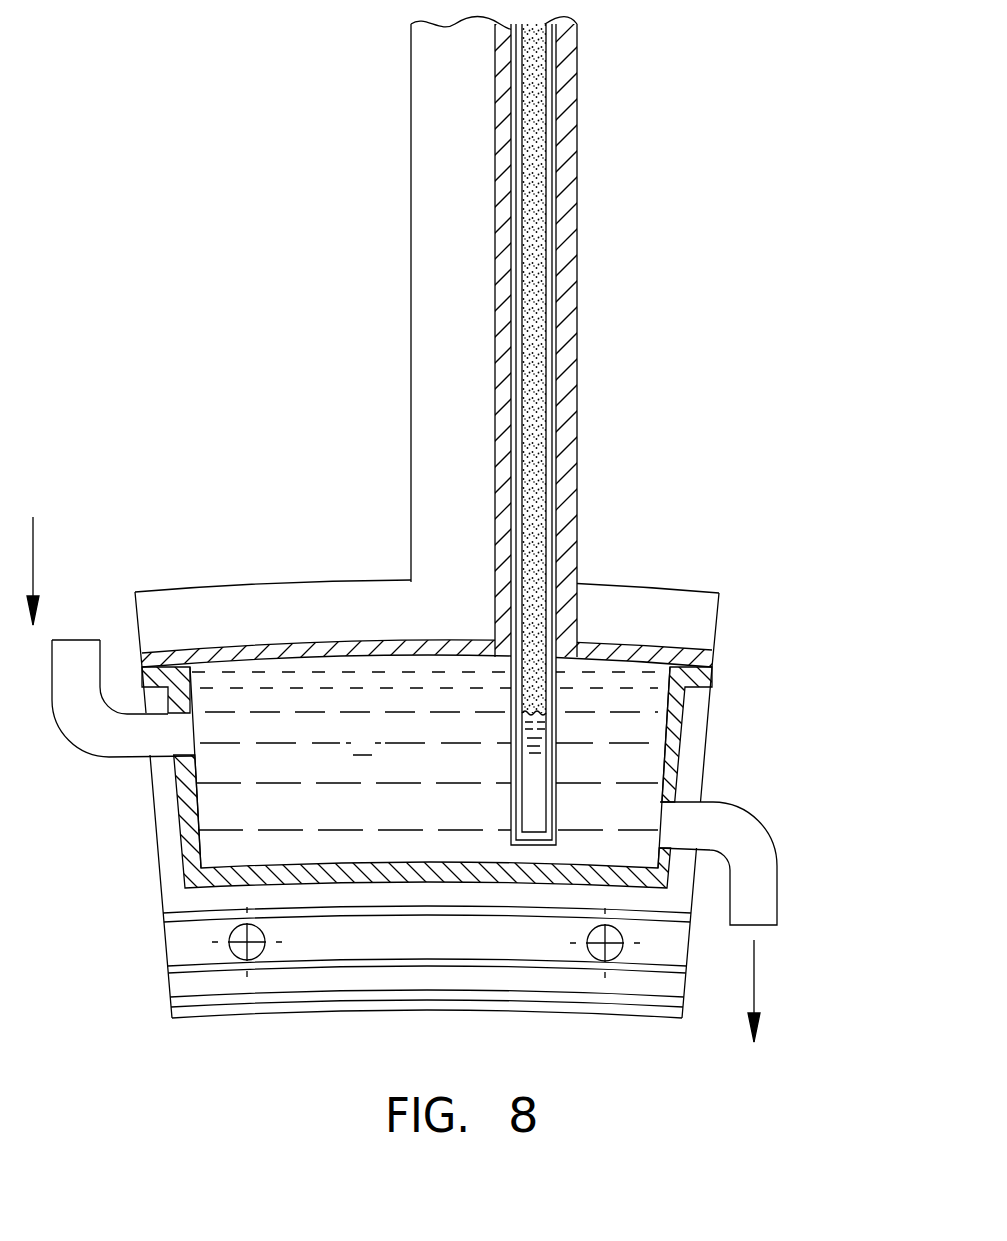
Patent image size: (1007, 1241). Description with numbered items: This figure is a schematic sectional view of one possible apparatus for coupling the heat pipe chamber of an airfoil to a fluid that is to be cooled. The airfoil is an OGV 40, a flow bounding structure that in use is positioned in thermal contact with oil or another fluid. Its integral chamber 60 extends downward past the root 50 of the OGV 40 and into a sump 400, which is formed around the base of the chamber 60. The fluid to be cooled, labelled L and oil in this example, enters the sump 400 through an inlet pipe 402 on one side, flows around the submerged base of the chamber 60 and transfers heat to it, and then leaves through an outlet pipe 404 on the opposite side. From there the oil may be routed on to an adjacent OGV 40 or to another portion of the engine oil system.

The OGV 40 is at (642, 160).
The root 50 is at (495, 618).
The chamber 60 is at (555, 767).
The sump 400 is at (185, 792).
The inlet pipe 402 is at (73, 638).
The outlet pipe 404 is at (777, 925).